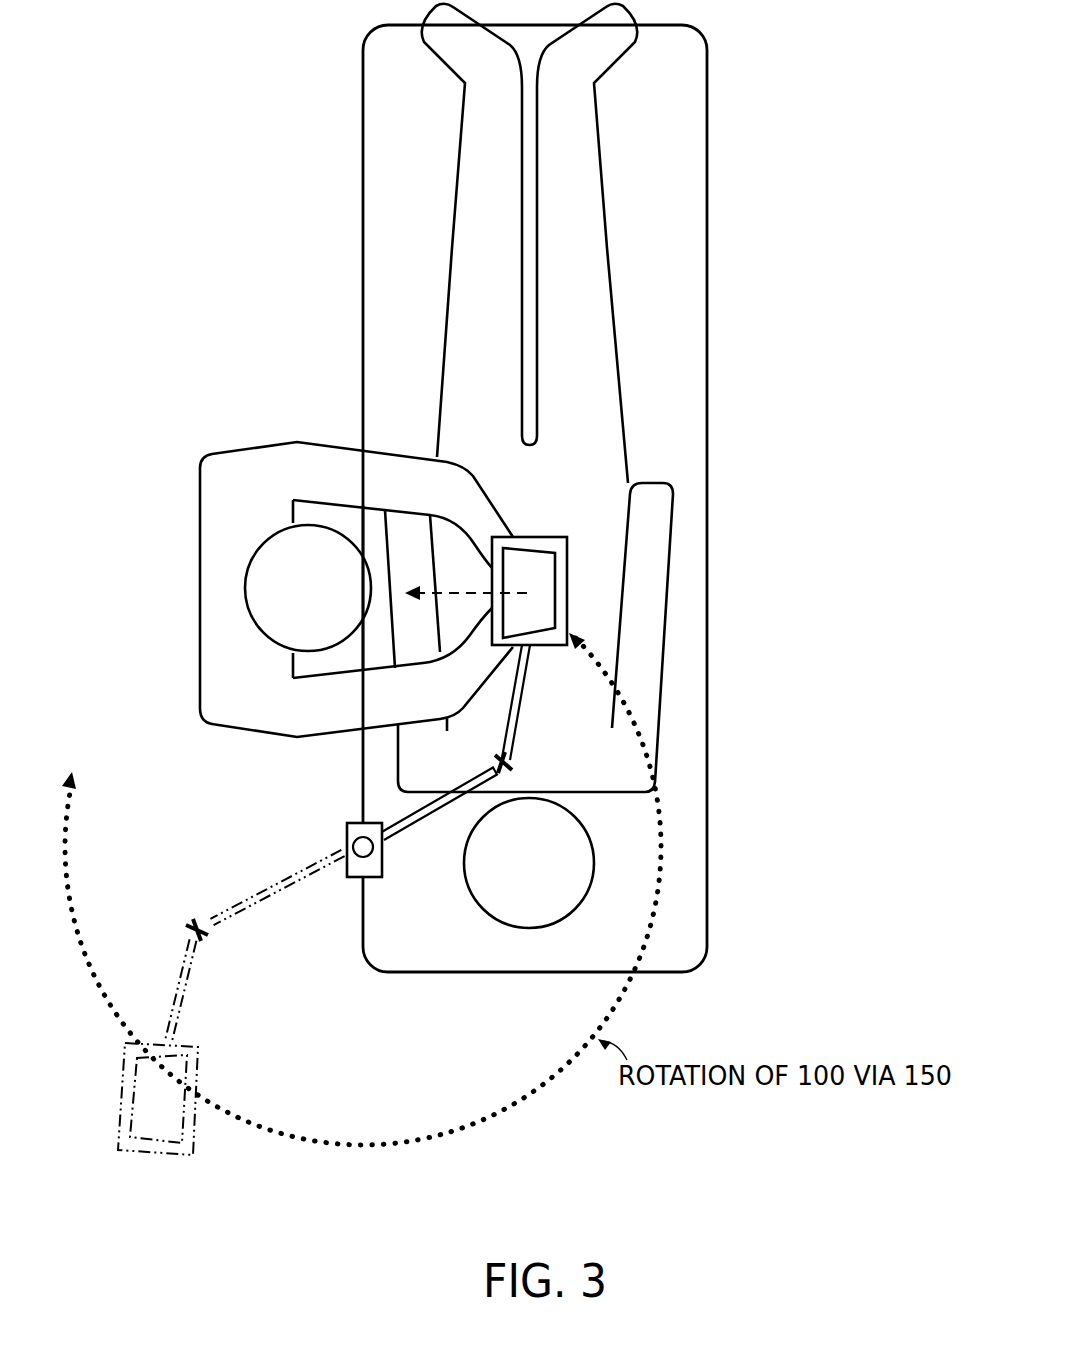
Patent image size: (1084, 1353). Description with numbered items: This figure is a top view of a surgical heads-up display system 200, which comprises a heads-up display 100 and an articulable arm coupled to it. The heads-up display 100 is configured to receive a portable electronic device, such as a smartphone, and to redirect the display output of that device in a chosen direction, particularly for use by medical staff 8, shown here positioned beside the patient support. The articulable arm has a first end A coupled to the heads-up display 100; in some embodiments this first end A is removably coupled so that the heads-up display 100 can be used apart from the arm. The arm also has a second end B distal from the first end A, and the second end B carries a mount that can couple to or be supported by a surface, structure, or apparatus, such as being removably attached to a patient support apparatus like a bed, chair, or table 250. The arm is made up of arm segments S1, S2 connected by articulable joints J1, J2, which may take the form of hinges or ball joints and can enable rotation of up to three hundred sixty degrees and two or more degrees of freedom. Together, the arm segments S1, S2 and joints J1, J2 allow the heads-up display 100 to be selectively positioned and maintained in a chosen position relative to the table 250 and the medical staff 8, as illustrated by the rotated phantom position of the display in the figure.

The medical staff 8 is at (200, 503).
The heads-up display 100 is at (579, 589).
The surgical heads-up display system 200 is at (853, 350).
The table 250 is at (708, 152).
The first end A is at (548, 648).
The second end B is at (374, 818).
The arm segment S1 is at (523, 682).
The arm segment S2 is at (428, 815).
The articulable joint J1 is at (512, 762).
The articulable joint J2 is at (338, 842).